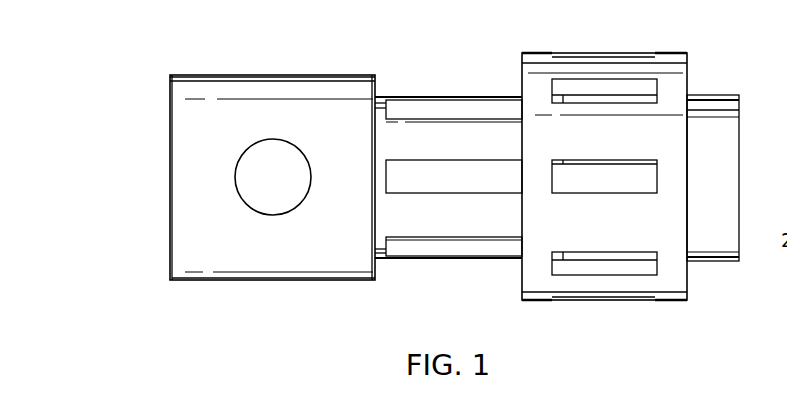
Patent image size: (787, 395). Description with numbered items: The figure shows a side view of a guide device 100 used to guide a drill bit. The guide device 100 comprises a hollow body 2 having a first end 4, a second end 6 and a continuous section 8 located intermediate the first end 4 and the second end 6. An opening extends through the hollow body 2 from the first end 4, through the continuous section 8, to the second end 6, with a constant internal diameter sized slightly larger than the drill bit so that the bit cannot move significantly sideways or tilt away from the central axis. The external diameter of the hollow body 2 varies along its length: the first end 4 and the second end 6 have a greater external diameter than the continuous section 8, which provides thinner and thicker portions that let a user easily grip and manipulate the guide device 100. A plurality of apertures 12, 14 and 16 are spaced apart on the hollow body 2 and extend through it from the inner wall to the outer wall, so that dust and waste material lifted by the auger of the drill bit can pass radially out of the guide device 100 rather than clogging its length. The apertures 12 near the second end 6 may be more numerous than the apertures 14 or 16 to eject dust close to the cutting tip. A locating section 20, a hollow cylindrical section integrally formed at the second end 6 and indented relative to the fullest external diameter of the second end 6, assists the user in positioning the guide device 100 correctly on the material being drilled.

The guide device 100 is at (143, 221).
The hollow body 2 is at (412, 92).
The first end 4 is at (170, 281).
The aperture 16 is at (278, 195).
The continuous section 8 is at (383, 252).
The aperture 14 is at (455, 245).
The aperture 12 is at (601, 266).
The second end 6 is at (686, 298).
The locating section 20 is at (715, 175).